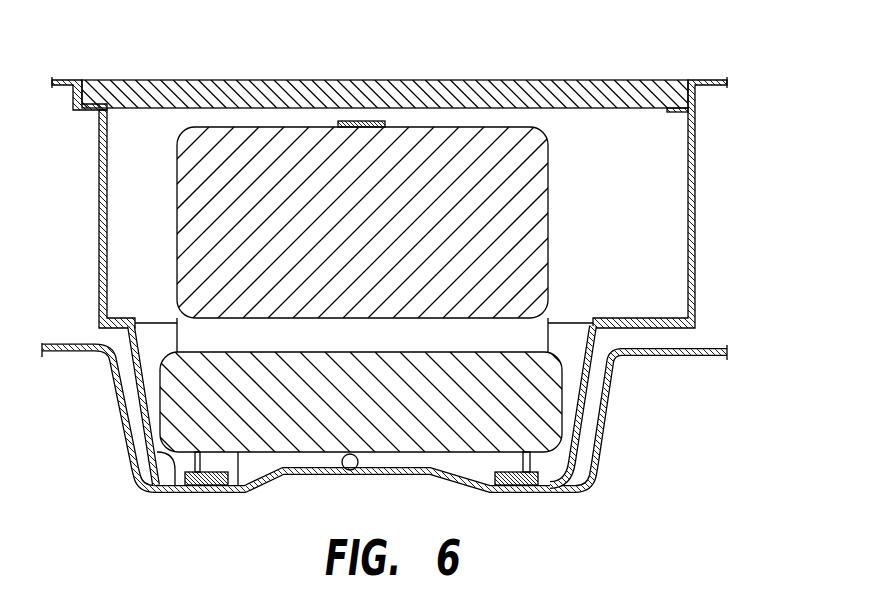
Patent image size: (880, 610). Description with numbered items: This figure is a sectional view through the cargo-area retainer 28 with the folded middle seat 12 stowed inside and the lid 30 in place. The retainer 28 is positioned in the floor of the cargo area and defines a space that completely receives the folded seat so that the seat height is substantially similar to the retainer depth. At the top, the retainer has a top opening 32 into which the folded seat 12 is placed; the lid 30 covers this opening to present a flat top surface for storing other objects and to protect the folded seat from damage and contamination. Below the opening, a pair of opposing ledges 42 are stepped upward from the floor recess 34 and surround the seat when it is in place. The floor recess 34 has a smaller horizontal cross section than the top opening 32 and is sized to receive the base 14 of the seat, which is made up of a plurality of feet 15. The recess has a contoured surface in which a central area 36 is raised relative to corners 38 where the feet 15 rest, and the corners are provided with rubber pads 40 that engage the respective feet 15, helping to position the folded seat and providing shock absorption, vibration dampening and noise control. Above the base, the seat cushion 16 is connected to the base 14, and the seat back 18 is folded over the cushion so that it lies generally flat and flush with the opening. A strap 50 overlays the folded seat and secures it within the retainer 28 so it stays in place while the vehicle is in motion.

The middle seat 12 is at (367, 289).
The base 14 is at (240, 488).
The feet 15 is at (533, 466).
The seat cushion 16 is at (190, 300).
The seat back 18 is at (203, 177).
The retainer 28 is at (696, 188).
The lid 30 is at (600, 92).
The top opening 32 is at (140, 137).
The floor recess 34 is at (584, 413).
The central area 36 is at (343, 470).
The corners 38 is at (157, 452).
The rubber pads 40 is at (555, 487).
The ledges 42 is at (565, 323).
The strap 50 is at (359, 121).